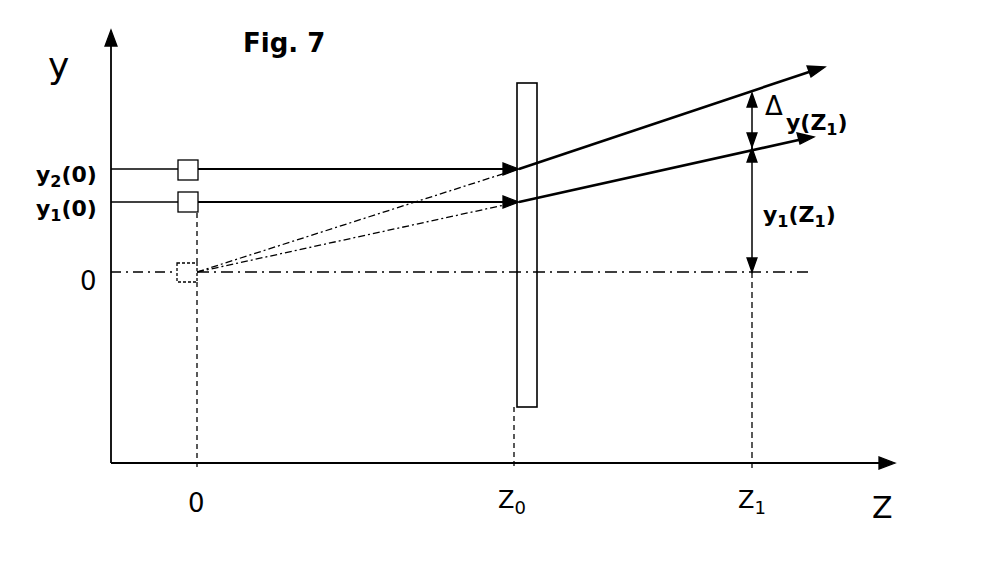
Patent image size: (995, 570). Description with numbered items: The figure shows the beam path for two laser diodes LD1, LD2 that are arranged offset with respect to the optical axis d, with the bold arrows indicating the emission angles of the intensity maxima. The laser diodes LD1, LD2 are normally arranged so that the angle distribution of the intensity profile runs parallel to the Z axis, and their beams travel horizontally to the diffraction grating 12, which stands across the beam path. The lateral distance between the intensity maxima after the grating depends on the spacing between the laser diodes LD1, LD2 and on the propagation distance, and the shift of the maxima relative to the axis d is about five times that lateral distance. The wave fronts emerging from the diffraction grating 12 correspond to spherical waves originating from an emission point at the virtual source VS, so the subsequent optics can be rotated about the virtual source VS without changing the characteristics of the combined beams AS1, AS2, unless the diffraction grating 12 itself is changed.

The diffraction grating 12 is at (530, 112).
The laser diode LD1 is at (190, 212).
The laser diode LD2 is at (180, 172).
The virtual source VS is at (187, 279).
The combined beam AS1 is at (345, 202).
The combined beam AS2 is at (282, 167).
The optical axis d is at (650, 274).